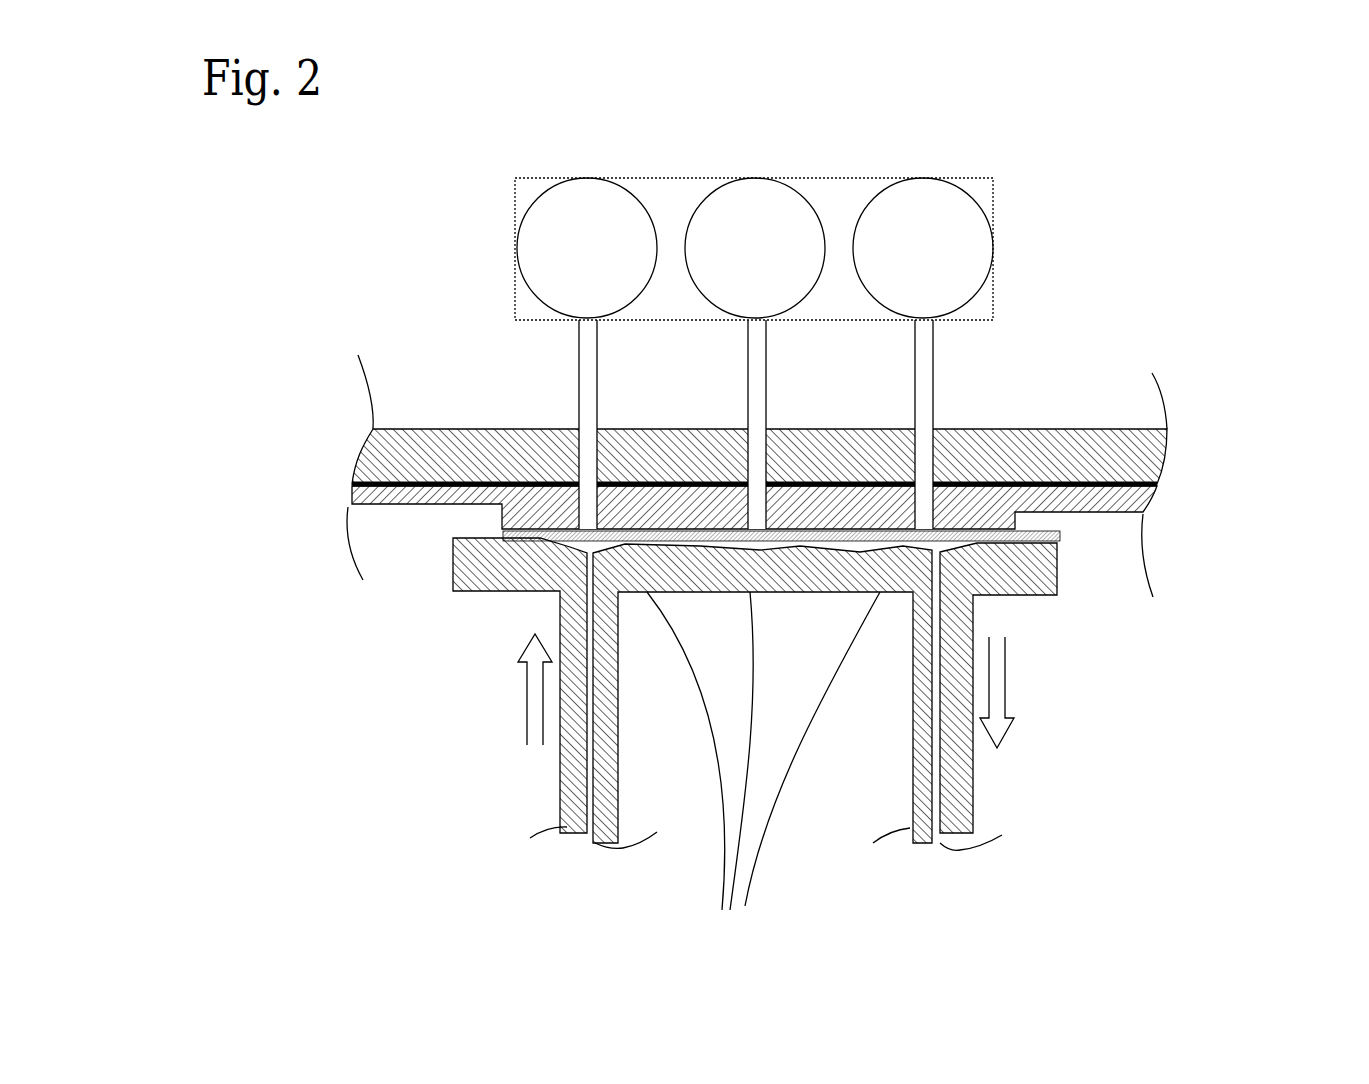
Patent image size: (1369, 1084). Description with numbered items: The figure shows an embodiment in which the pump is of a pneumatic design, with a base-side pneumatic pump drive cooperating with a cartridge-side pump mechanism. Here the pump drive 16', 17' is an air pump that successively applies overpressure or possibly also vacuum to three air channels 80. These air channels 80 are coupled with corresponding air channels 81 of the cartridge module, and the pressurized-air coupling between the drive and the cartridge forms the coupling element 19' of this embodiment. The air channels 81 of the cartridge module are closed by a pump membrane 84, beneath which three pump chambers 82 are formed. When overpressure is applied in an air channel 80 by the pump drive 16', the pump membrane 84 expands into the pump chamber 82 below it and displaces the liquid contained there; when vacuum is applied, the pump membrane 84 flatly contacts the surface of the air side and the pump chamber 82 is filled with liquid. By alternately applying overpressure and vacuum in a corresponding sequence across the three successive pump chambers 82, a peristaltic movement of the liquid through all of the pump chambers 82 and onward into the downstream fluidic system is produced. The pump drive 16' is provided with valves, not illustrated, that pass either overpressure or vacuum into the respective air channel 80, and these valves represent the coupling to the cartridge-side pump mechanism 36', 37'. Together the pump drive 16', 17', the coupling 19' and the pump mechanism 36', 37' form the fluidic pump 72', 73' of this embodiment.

The pump drive 16' is at (814, 192).
The pump drive 17' is at (814, 192).
The fluidic pump 72' is at (803, 297).
The fluidic pump 73' is at (803, 297).
The coupling element 19' is at (702, 396).
The air channels 80 is at (765, 377).
The air channels 81 is at (530, 508).
The pump membrane 84 is at (1040, 538).
The pump mechanism 36' is at (587, 745).
The pump mechanism 37' is at (587, 745).
The pump chambers 82 is at (763, 772).